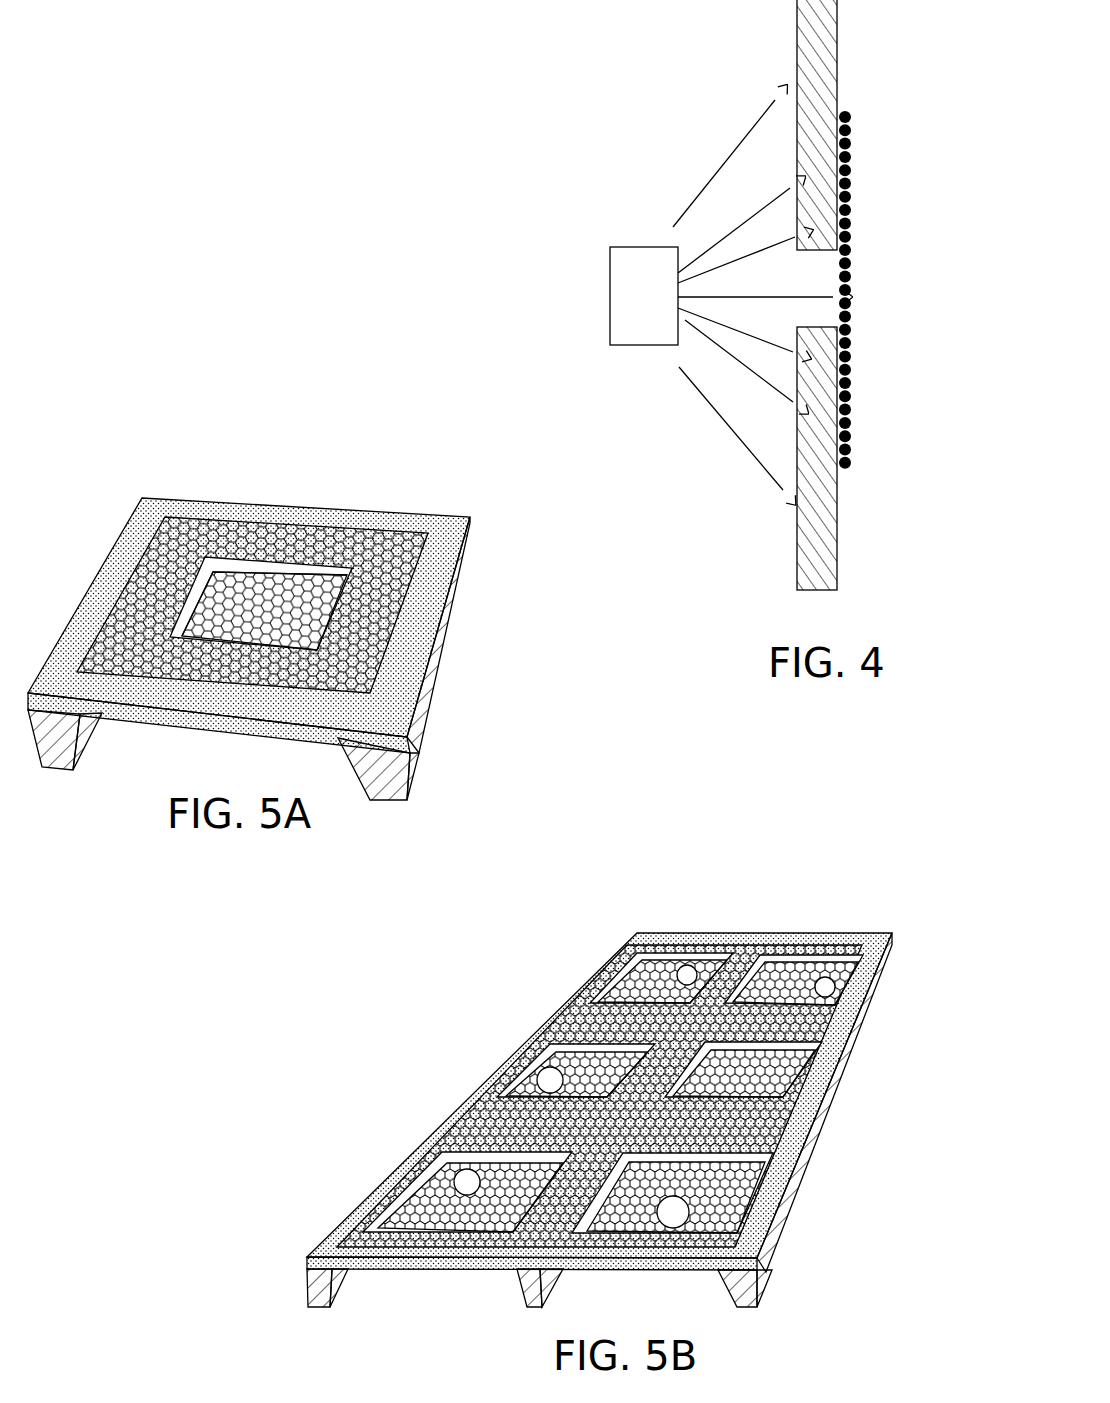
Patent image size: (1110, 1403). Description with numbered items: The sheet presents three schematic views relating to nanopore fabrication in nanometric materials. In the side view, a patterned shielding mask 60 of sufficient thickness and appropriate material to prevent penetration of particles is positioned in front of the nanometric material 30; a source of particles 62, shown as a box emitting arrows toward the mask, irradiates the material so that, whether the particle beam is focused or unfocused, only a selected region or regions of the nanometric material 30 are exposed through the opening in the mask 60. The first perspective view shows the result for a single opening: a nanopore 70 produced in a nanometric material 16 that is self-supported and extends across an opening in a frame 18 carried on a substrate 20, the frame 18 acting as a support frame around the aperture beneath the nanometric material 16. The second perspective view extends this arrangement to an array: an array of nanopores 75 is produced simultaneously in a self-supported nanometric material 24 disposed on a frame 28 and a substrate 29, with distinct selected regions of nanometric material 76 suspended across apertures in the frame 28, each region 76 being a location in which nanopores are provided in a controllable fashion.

In FIG. 5A, the nanometric material 16 is at (270, 649).
In FIG. 5A, the frame membrane 18 is at (410, 672).
In FIG. 5A, the substrate 20 is at (418, 747).
In FIG. 5B, the self-supported nanometric material 24 is at (767, 1186).
In FIG. 5B, the support frame 28 is at (760, 1230).
In FIG. 5B, the substrate 29 is at (767, 1275).
In FIG. 4, the nanometric material 30 is at (853, 195).
In FIG. 4, the patterned shielding mask 60 is at (797, 20).
In FIG. 4, the radiation source 62 is at (721, 295).
In FIG. 5A, the nanopore 70 is at (261, 603).
In FIG. 5B, the array of nanopores 75 is at (599, 1074).
In FIG. 5B, the selected regions of nanometric material 76 is at (623, 983).